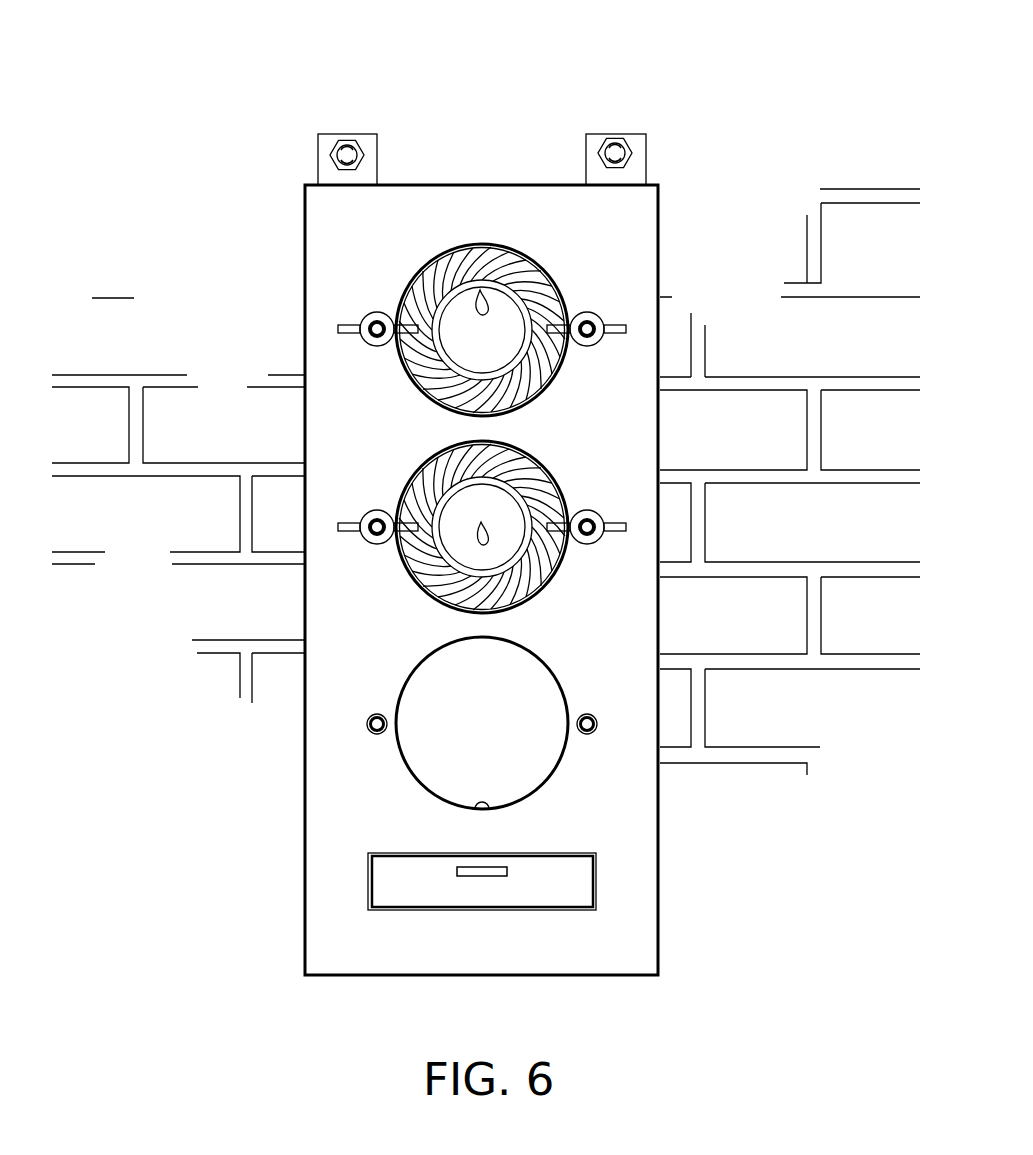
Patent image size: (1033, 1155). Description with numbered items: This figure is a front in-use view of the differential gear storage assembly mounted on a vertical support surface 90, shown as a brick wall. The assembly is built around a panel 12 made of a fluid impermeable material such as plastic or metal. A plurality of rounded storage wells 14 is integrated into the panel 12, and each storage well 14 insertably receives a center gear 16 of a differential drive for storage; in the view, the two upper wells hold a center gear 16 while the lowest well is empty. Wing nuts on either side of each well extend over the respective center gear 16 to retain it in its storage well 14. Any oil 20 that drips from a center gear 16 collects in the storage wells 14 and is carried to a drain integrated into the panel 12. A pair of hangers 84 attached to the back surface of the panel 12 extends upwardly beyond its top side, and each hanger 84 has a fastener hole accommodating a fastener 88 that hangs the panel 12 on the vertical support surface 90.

The panel 12 is at (709, 149).
The storage wells 14 is at (408, 283).
The center gear 16 is at (483, 255).
The oil 20 is at (486, 303).
The hangers 84 is at (318, 134).
The fastener 88 is at (348, 138).
The vertical support surface 90 is at (850, 262).